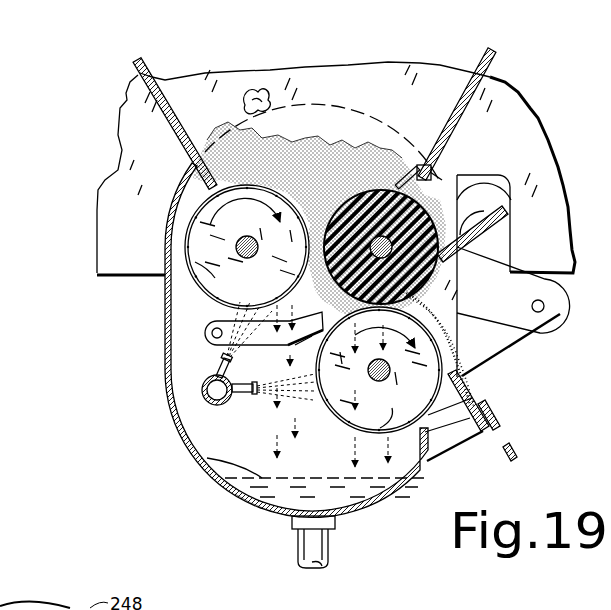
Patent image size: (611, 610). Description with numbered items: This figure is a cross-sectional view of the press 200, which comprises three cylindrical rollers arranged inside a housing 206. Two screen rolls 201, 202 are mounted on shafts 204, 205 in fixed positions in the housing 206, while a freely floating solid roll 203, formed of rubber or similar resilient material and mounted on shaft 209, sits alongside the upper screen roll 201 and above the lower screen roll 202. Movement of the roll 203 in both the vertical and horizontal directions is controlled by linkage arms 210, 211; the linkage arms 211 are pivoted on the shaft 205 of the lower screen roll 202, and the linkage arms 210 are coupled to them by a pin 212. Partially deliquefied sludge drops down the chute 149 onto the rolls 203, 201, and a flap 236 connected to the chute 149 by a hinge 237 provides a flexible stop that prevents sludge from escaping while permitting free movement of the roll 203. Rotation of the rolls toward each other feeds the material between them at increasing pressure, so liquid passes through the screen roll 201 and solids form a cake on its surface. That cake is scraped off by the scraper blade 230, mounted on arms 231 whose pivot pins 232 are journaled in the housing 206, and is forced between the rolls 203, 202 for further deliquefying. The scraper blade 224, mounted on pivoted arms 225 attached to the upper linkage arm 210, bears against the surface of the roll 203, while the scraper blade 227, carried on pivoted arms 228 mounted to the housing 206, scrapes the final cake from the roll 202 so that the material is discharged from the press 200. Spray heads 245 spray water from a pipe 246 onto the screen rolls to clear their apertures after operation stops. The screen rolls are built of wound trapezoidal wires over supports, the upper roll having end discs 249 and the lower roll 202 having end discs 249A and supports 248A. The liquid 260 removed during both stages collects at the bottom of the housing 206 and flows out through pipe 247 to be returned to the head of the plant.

The chute 149 is at (128, 96).
The press 200 is at (163, 421).
The screen roll 201 is at (192, 282).
The screen roll 202 is at (494, 413).
The solid roll 203 is at (432, 215).
The shaft 204 is at (235, 250).
The shaft 205 is at (378, 382).
The housing 206 is at (233, 494).
The shaft 209 is at (430, 278).
The linkage arm 210 is at (540, 332).
The linkage arm 211 is at (505, 348).
The pin 212 is at (545, 307).
The scraper blade 224 is at (490, 228).
The pivoted arms 225 is at (490, 200).
The scraper blade 227 is at (508, 446).
The pivoted arms 228 is at (447, 450).
The scraper blade 230 is at (292, 350).
The arms 231 is at (205, 342).
The pivot pins 232 is at (211, 329).
The flap 236 is at (397, 181).
The hinge 237 is at (416, 165).
The spray heads 245 is at (222, 362).
The pipe 246 is at (203, 390).
The pipe 247 is at (300, 548).
The supports 248A is at (380, 428).
The end discs 249 is at (200, 263).
The end discs 249A is at (450, 388).
The liquid 260 is at (207, 458).